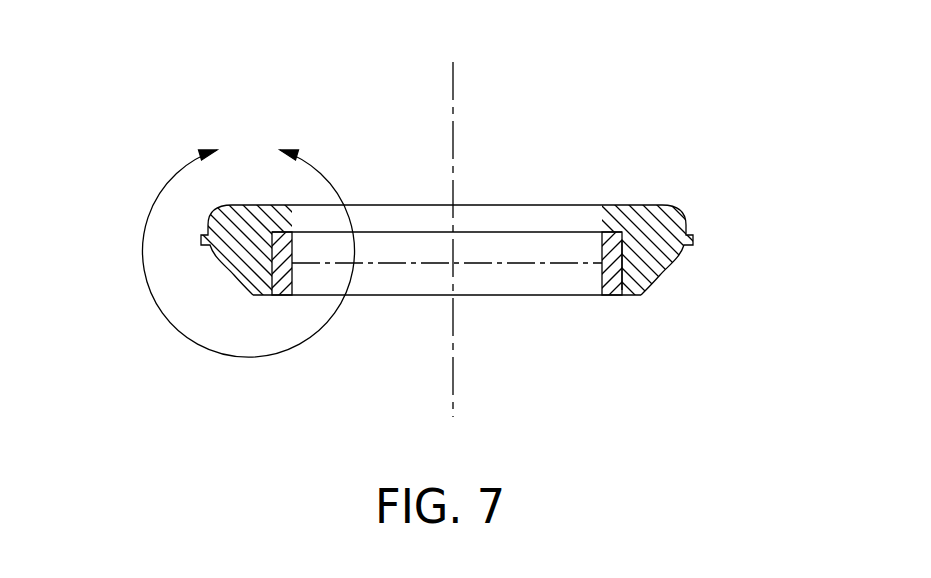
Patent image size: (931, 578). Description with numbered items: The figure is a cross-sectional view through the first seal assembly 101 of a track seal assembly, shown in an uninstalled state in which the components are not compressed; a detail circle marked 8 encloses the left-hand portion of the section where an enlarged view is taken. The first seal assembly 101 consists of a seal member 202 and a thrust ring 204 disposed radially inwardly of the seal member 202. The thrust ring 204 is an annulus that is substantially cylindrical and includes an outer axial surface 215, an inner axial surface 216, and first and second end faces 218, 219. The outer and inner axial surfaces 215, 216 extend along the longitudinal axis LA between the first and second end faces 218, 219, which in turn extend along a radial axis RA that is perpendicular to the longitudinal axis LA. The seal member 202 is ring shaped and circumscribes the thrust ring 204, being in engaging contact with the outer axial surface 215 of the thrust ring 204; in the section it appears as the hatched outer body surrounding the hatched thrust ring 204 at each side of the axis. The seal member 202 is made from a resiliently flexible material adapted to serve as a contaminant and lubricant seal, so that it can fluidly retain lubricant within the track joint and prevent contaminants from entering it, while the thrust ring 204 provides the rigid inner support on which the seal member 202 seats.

The first seal assembly 101 is at (165, 125).
The detail circle for FIG. 8 is at (249, 241).
The longitudinal axis LA is at (453, 96).
The radial axis RA is at (433, 263).
The seal member 202 is at (657, 237).
The thrust ring 204 is at (608, 270).
The outer axial surface 215 is at (628, 262).
The inner axial surface 216 is at (602, 252).
The first end face 218 is at (611, 233).
The second end face 219 is at (610, 295).